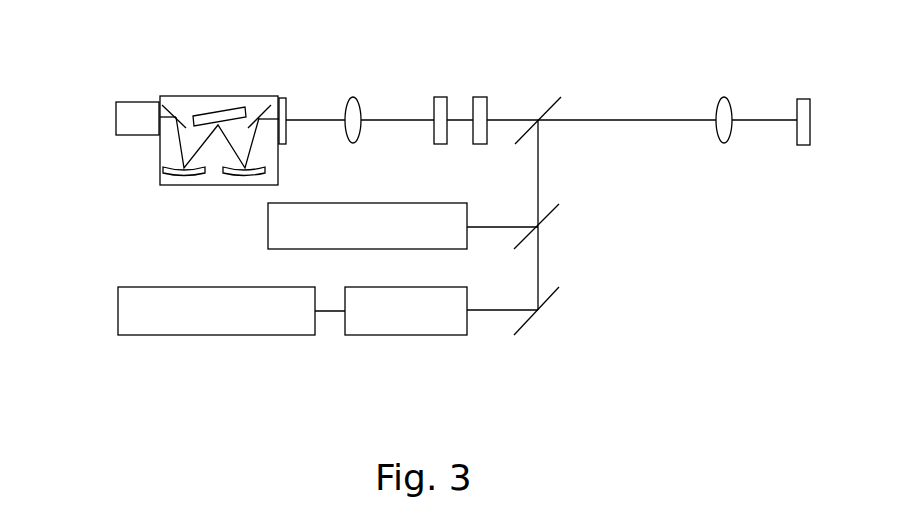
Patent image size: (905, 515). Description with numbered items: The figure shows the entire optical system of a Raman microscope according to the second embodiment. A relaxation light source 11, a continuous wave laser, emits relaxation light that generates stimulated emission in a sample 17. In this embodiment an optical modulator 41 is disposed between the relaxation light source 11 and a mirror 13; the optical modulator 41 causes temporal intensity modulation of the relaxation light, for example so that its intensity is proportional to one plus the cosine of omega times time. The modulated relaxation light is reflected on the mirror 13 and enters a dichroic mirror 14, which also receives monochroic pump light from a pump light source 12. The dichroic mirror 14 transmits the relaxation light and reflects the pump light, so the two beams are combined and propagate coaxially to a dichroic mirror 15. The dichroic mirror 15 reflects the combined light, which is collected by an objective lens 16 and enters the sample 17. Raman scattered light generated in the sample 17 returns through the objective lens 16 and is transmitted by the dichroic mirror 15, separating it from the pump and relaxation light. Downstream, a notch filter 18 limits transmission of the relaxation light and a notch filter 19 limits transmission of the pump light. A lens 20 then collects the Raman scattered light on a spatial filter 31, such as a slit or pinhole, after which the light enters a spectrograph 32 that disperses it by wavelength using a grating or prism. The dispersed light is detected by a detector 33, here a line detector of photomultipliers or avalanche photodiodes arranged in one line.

The relaxation light source 11 is at (118, 315).
The pump light source 12 is at (268, 230).
The mirror 13 is at (552, 304).
The dichroic mirror 14 is at (552, 220).
The dichroic mirror 15 is at (543, 108).
The objective lens 16 is at (725, 97).
The sample 17 is at (805, 99).
The notch filter 18 is at (481, 97).
The notch filter 19 is at (442, 97).
The lens 20 is at (355, 97).
The spatial filter 31 is at (283, 98).
The spectrograph 32 is at (220, 96).
The detector 33 is at (141, 101).
The optical modulator 41 is at (399, 335).